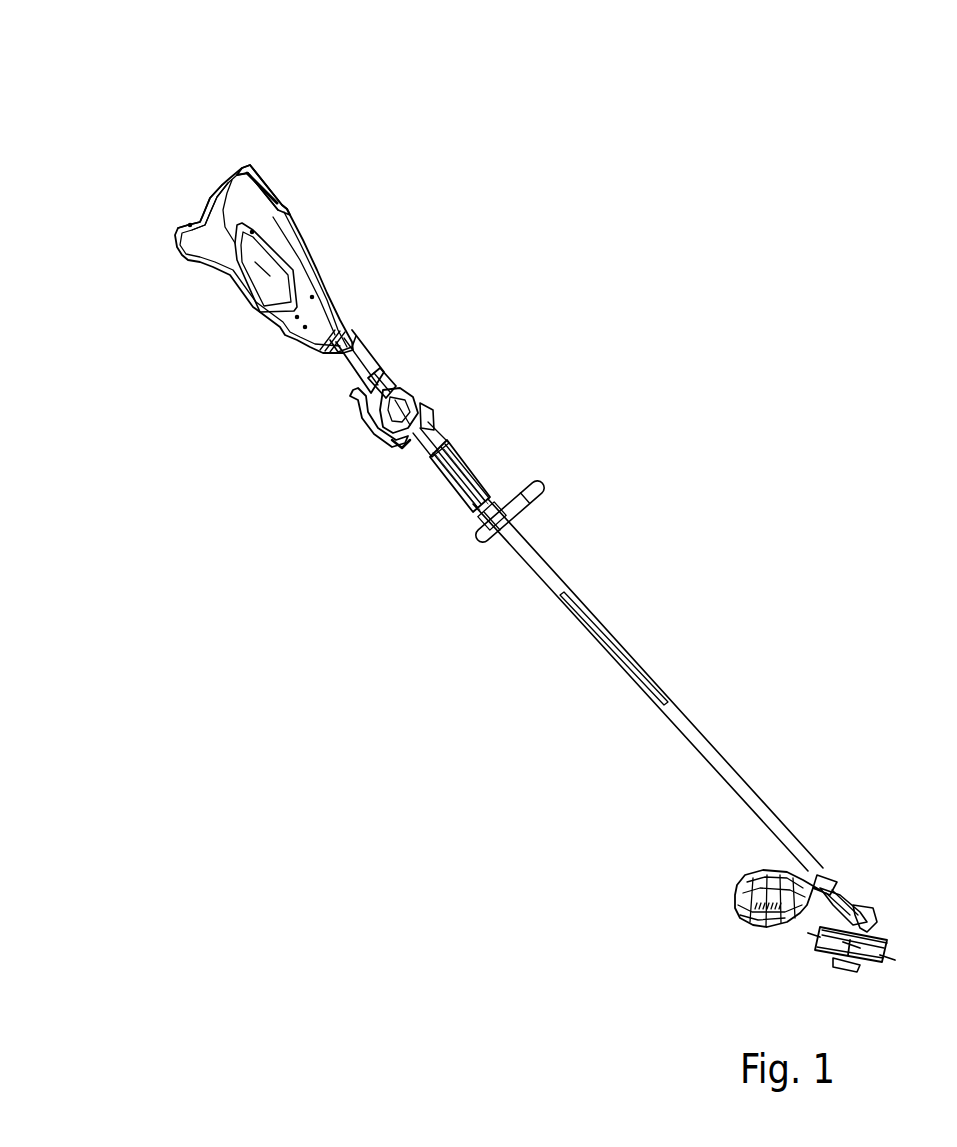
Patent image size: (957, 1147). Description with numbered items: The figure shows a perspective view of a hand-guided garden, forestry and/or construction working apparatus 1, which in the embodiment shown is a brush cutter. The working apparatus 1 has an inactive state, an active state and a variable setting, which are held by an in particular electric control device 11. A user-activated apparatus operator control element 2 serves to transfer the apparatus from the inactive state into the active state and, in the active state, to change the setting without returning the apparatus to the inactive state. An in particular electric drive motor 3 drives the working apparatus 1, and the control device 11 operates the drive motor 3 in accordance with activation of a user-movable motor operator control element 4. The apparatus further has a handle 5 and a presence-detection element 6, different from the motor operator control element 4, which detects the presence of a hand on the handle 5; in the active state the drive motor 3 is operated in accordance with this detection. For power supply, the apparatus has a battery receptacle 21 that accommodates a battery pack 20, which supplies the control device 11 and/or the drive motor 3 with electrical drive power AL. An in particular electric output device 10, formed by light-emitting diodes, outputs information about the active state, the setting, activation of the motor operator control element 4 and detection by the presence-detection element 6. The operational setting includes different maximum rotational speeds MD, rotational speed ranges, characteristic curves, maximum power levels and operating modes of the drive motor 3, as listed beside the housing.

The garden, forestry and/or construction working apparatus 1 is at (164, 108).
The apparatus operator control element 2 is at (397, 382).
The drive motor 3 is at (290, 237).
The motor operator control element 4 is at (347, 395).
The handle 5 is at (347, 358).
The presence-detection element 6 is at (370, 352).
The output device 10 is at (407, 395).
The control device 11 is at (250, 255).
The battery pack 20 is at (223, 183).
The battery receptacle 21 is at (213, 200).
The electrical drive power AL is at (250, 191).
The operating modes / states text block MD is at (263, 267).